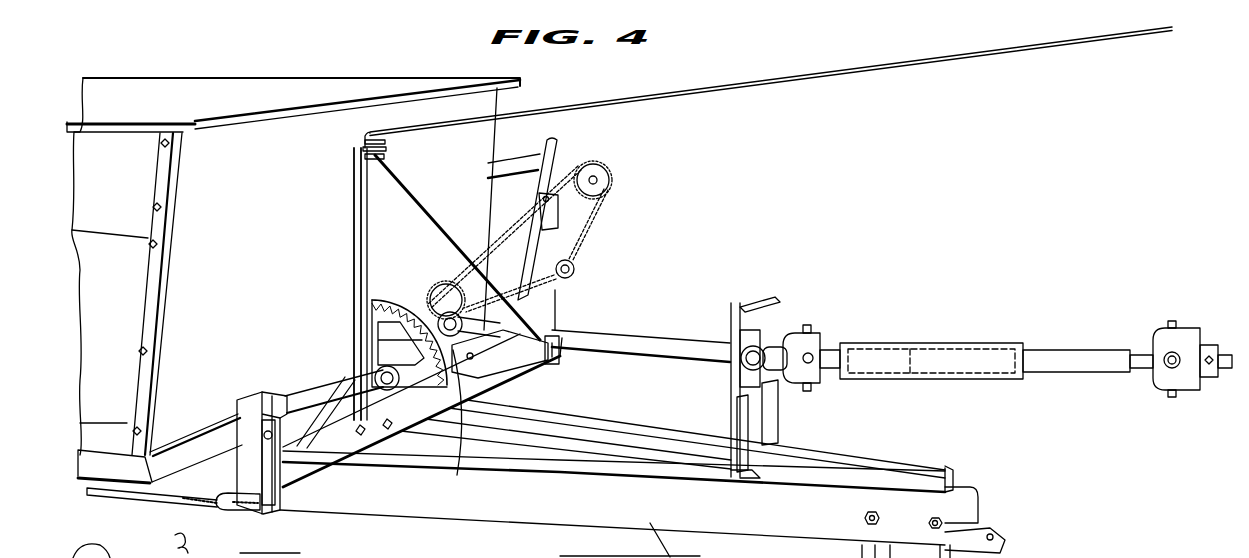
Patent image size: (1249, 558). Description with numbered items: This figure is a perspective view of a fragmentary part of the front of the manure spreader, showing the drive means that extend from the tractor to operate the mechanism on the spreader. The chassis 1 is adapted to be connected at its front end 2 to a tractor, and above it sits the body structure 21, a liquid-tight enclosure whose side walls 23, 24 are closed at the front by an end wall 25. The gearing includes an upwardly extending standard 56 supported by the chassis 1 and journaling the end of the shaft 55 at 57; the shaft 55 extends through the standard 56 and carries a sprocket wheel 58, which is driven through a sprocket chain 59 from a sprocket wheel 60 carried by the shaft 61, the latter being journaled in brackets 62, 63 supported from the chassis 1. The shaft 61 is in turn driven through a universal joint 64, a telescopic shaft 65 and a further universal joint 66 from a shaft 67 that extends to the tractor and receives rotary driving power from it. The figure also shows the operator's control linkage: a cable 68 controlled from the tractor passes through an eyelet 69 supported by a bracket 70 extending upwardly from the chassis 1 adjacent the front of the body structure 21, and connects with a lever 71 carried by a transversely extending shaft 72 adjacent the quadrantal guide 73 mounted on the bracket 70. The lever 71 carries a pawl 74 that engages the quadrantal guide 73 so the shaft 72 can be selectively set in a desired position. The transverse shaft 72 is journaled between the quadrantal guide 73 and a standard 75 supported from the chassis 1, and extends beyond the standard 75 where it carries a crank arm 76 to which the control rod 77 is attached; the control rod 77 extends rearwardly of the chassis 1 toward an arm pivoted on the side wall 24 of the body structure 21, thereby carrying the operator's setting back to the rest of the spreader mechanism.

The chassis 1 is at (638, 415).
The front end 2 is at (983, 533).
The body structure 21 is at (292, 76).
The side wall 23 is at (367, 87).
The side wall 24 is at (115, 145).
The end wall 25 is at (215, 226).
The shaft 55 is at (508, 175).
The standard 56 is at (551, 304).
The journal 57 is at (557, 157).
The sprocket wheel 58 is at (607, 180).
The sprocket chain 59 is at (500, 220).
The sprocket wheel 60 is at (440, 290).
The shaft 61 is at (647, 347).
The bracket 62 is at (417, 303).
The bracket 63 is at (735, 333).
The universal joint 64 is at (823, 342).
The telescopic shaft 65 is at (977, 353).
The universal joint 66 is at (1145, 340).
The shaft 67 is at (1226, 378).
The cable 68 is at (967, 57).
The eyelet 69 is at (365, 140).
The bracket 70 is at (363, 223).
The lever 71 is at (553, 358).
The transverse shaft 72 is at (323, 410).
The quadrantal guide 73 is at (383, 322).
The pawl 74 is at (457, 455).
The standard 75 is at (242, 452).
The crank arm 76 is at (285, 487).
The control rod 77 is at (143, 505).